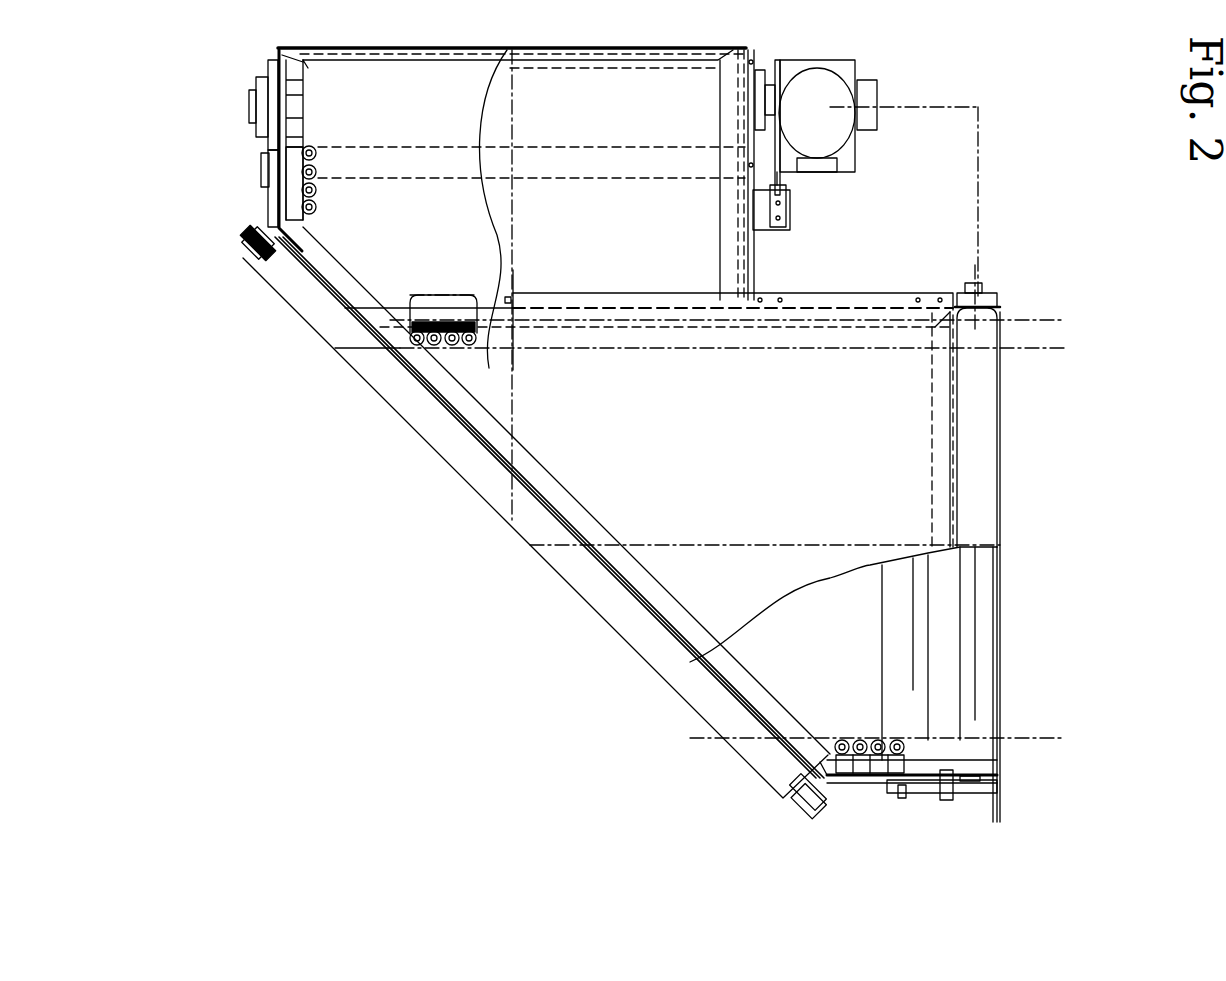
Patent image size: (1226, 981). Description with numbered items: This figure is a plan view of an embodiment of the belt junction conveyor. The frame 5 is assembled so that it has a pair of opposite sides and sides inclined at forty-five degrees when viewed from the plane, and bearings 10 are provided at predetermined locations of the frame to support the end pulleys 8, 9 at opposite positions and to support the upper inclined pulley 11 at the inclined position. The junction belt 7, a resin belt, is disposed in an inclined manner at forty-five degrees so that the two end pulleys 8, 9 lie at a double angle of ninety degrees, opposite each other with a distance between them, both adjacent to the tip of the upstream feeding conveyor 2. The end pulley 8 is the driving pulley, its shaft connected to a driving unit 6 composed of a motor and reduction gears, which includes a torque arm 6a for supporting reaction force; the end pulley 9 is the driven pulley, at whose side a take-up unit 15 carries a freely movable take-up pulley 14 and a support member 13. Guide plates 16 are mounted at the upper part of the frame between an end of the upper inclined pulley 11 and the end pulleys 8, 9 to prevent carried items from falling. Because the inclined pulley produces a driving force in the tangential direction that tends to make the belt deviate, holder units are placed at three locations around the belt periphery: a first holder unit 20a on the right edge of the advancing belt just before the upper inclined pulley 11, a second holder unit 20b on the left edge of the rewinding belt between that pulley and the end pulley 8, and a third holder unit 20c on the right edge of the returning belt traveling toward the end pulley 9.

The upstream feeding conveyor 2 is at (1040, 360).
The frame 5 is at (300, 65).
The driving unit 6 is at (852, 68).
The torque arm 6a is at (786, 178).
The junction belt 7 is at (707, 253).
The end pulley 8 is at (331, 77).
The end pulley 9 is at (986, 338).
The bearing 10 is at (263, 82).
The upper inclined pulley 11 is at (437, 437).
The support plate 13 is at (892, 638).
The take-up pulley 14 is at (953, 675).
The take-up unit 15 is at (958, 803).
The guide plate 16 is at (397, 310).
The first holder unit 20a is at (434, 292).
The second holder unit 20b is at (325, 214).
The third holder unit 20c is at (846, 727).